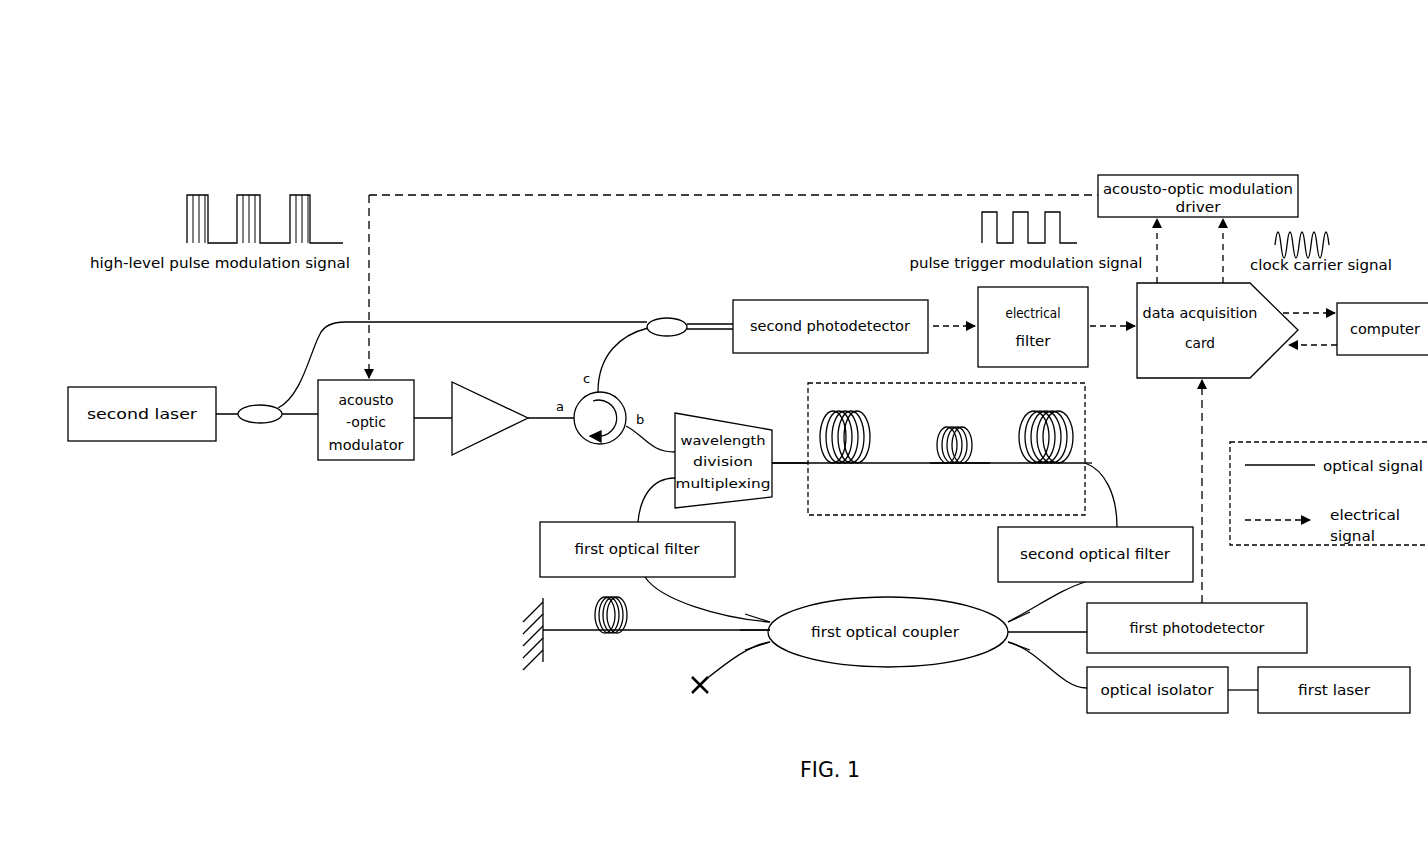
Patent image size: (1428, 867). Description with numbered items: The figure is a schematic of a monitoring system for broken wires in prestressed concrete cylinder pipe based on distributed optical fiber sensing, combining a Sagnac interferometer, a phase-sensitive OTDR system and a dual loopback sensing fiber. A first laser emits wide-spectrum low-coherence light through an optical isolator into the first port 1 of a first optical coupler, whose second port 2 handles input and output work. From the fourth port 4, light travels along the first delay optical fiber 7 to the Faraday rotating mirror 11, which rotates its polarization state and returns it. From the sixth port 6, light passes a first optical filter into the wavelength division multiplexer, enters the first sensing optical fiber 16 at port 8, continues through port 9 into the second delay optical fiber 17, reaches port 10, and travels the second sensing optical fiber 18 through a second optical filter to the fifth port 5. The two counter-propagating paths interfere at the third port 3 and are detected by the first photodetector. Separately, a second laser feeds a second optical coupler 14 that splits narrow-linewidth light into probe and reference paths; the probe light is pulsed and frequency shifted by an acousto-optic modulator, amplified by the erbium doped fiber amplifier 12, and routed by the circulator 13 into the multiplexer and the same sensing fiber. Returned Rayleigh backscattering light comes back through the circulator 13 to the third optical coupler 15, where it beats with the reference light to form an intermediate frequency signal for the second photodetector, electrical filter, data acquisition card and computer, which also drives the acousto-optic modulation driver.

The first port of the first optical coupler 1 is at (1023, 661).
The second port of the first optical coupler 2 is at (755, 661).
The third port of the first optical coupler 3 is at (1047, 633).
The fourth port of the first optical coupler 4 is at (755, 633).
The fifth port of the first optical coupler 5 is at (1023, 605).
The sixth port of the first optical coupler 6 is at (755, 605).
The first delay optical fiber 7 is at (620, 617).
The port 8 is at (790, 452).
The port 9 is at (960, 478).
The port 10 is at (1102, 452).
The Faraday rotating mirror 11 is at (543, 640).
The erbium doped fiber amplifier 12 is at (470, 447).
The circulator 13 is at (582, 404).
The second optical coupler 14 is at (255, 423).
The third optical coupler 15 is at (670, 318).
The first sensing optical fiber 16 is at (843, 465).
The second delay optical fiber 17 is at (953, 428).
The second sensing optical fiber 18 is at (1040, 410).